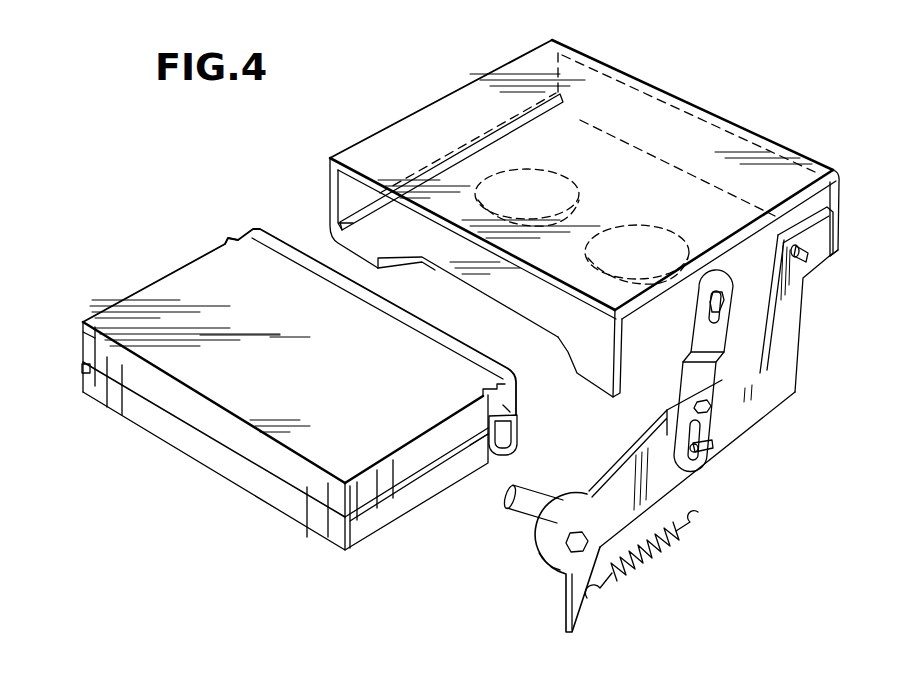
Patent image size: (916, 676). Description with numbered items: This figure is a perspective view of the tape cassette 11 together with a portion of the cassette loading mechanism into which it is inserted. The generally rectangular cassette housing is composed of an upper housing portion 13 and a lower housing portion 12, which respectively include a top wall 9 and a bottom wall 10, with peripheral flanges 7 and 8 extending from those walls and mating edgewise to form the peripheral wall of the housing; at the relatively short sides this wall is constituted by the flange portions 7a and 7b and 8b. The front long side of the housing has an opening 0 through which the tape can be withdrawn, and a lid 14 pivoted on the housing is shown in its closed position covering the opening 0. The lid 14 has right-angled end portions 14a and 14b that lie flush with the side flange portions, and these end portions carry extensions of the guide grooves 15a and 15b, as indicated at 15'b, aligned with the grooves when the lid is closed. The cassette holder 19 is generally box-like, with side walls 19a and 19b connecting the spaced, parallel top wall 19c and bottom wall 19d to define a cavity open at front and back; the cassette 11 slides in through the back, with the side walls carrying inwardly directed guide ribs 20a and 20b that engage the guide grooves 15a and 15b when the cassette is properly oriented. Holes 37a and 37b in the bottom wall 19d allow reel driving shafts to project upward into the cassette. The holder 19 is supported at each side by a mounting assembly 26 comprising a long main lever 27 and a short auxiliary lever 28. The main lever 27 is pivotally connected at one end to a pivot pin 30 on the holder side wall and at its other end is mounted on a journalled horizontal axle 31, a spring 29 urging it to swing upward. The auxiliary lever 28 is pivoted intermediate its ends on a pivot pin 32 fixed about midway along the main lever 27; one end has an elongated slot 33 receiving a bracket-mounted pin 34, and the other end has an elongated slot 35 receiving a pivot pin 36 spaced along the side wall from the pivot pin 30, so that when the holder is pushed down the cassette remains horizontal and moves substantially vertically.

The cassette holder 19 is at (435, 122).
The side wall 19a is at (330, 186).
The side wall 19b is at (822, 200).
The top wall 19c is at (645, 100).
The bottom wall 19d is at (510, 294).
The guide rib 20a is at (338, 222).
The guide rib 20b is at (606, 342).
The hole 37a is at (538, 172).
The hole 37b is at (637, 224).
The pivot pin 30 is at (812, 256).
The cassette 11 is at (147, 282).
The top wall 9 is at (197, 278).
The end portion of lid 14a is at (229, 240).
The flange portion 7a is at (83, 338).
The guide groove 15a is at (82, 368).
The peripheral flange 7 is at (118, 376).
The upper housing portion 13 is at (155, 387).
The lower housing portion 12 is at (198, 446).
The peripheral flange 8 is at (232, 478).
The bottom wall 10 is at (290, 508).
The flange portion 7b is at (404, 466).
The flange portion 8b is at (432, 497).
The guide groove 15b is at (480, 458).
The lid 14 is at (508, 392).
The guide groove extension 15'b is at (548, 411).
The end portion of lid 14b is at (514, 434).
The opening 0 is at (406, 322).
The mounting assembly 26 is at (742, 443).
The main lever 27 is at (790, 382).
The auxiliary lever 28 is at (704, 380).
The elongated slot 35 is at (710, 308).
The pivot pin 36 is at (734, 302).
The pivot pin 32 is at (712, 406).
The elongated slot 33 is at (692, 458).
The pin 34 is at (707, 452).
The axle 31 is at (520, 514).
The spring 29 is at (650, 562).